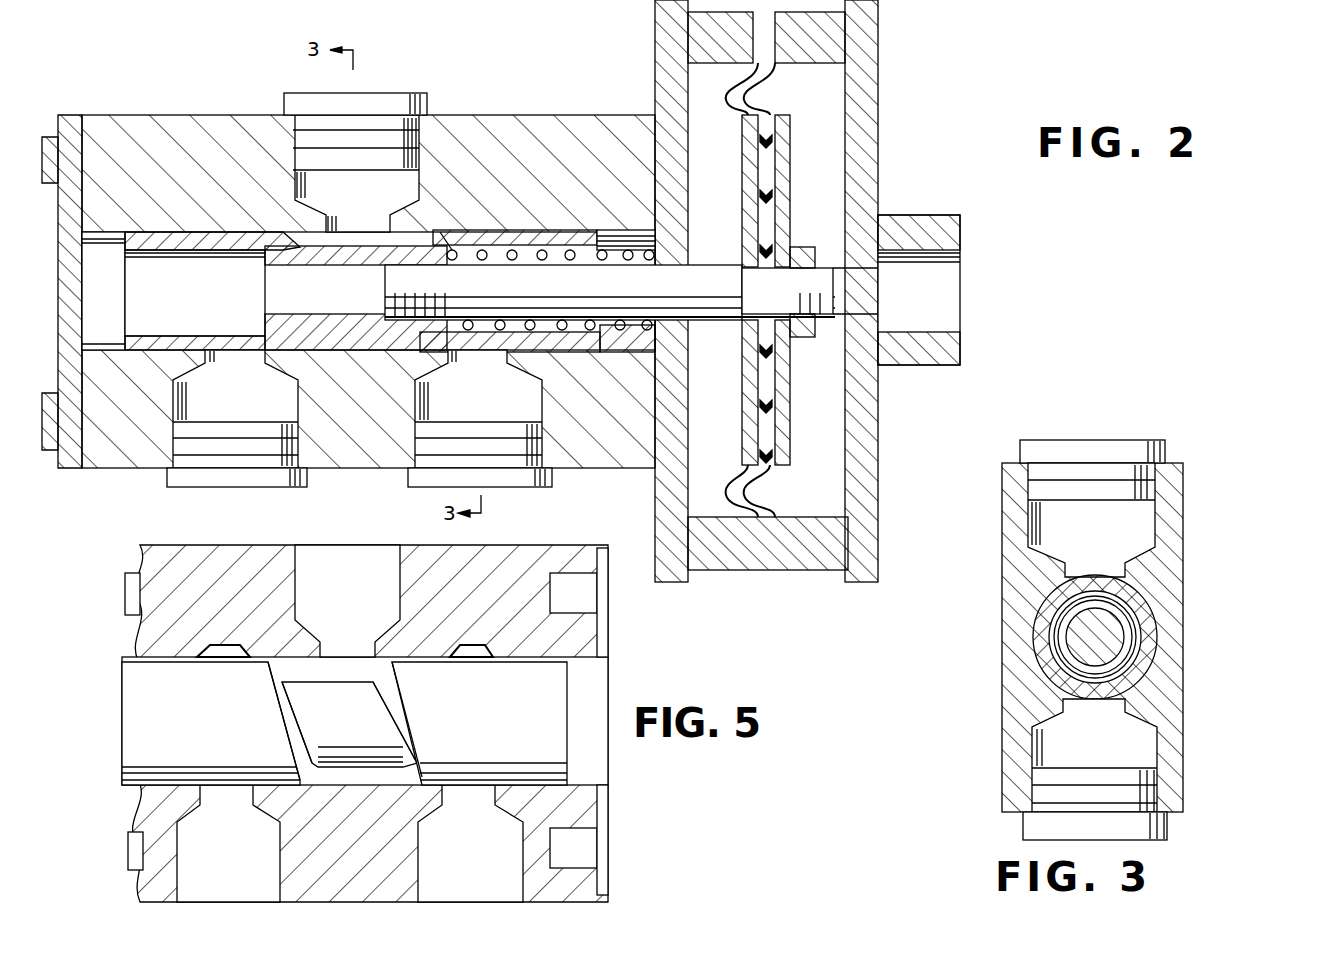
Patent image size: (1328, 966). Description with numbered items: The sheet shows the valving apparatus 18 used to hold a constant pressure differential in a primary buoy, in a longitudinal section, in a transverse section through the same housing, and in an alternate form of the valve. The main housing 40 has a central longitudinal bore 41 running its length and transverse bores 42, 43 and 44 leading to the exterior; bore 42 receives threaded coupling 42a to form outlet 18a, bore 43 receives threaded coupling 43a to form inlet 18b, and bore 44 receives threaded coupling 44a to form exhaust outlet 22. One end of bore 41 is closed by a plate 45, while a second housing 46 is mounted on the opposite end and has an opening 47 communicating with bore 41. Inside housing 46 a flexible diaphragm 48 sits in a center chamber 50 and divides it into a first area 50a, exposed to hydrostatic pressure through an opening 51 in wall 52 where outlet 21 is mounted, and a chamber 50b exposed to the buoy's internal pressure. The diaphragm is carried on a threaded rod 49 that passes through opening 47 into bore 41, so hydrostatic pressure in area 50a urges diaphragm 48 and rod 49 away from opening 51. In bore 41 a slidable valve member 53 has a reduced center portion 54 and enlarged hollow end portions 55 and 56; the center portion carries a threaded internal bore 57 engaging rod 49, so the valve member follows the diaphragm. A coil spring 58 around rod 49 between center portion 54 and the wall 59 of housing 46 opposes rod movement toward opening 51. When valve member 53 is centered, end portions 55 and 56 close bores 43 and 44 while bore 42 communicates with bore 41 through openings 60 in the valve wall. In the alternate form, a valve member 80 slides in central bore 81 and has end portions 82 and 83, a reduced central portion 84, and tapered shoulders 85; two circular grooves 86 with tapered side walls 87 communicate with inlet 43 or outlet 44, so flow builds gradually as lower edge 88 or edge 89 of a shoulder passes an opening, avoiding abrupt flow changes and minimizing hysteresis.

In FIG. 2, the valving apparatus 18 is at (600, 97).
In FIG. 2, the outlet 18a is at (384, 135).
In FIG. 3, the outlet 18a is at (1125, 490).
In FIG. 2, the inlet 18b is at (205, 445).
In FIG. 2, the outlet 21 is at (965, 239).
In FIG. 2, the exhaust outlet 22 is at (418, 482).
In FIG. 2, the housing 40 is at (178, 136).
In FIG. 5, the housing 40 is at (585, 639).
In FIG. 3, the housing 40 is at (1175, 559).
In FIG. 2, the central longitudinal bore 41 is at (104, 265).
In FIG. 2, the transverse bore 42 is at (366, 192).
In FIG. 5, the transverse bore 42 is at (357, 599).
In FIG. 3, the transverse bore 42 is at (1120, 526).
In FIG. 2, the threaded coupling 42a is at (378, 98).
In FIG. 3, the threaded coupling 42a is at (1140, 445).
In FIG. 2, the transverse bore 43 is at (247, 412).
In FIG. 5, the transverse bore 43 is at (232, 855).
In FIG. 2, the threaded coupling 43a is at (240, 480).
In FIG. 2, the transverse bore 44 is at (492, 410).
In FIG. 5, the transverse bore 44 is at (475, 853).
In FIG. 3, the transverse bore 44 is at (1120, 750).
In FIG. 2, the threaded coupling 44a is at (528, 480).
In FIG. 3, the threaded coupling 44a is at (1165, 828).
In FIG. 2, the plate 45 is at (72, 140).
In FIG. 2, the second housing 46 is at (883, 165).
In FIG. 2, the opening 47 is at (690, 265).
In FIG. 2, the flexible diaphragm 48 is at (768, 155).
In FIG. 2, the threaded rod 49 is at (395, 297).
In FIG. 3, the threaded rod 49 is at (1105, 655).
In FIG. 2, the center chamber 50 is at (828, 477).
In FIG. 2, the first area 50a is at (835, 220).
In FIG. 2, the chamber 50b is at (732, 390).
In FIG. 2, the opening 51 is at (880, 294).
In FIG. 2, the wall 52 is at (865, 439).
In FIG. 2, the slidable valve member 53 is at (285, 336).
In FIG. 2, the center portion 54 is at (350, 330).
In FIG. 2, the enlarged end portion 55 is at (158, 343).
In FIG. 2, the enlarged end portion 56 is at (570, 345).
In FIG. 3, the enlarged end portion 56 is at (1150, 615).
In FIG. 2, the internal bore 57 is at (328, 302).
In FIG. 2, the coil spring 58 is at (615, 345).
In FIG. 3, the coil spring 58 is at (1130, 642).
In FIG. 2, the wall 59 is at (672, 160).
In FIG. 2, the openings 60 is at (255, 258).
In FIG. 5, the valve member 80 is at (495, 719).
In FIG. 5, the central bore 81 is at (590, 744).
In FIG. 5, the end portion 82 is at (165, 734).
In FIG. 5, the end portion 83 is at (580, 811).
In FIG. 5, the central portion 84 is at (160, 791).
In FIG. 5, the tapered shoulders 85 is at (285, 721).
In FIG. 5, the circular grooves 86 is at (215, 651).
In FIG. 5, the tapered side walls 87 is at (205, 659).
In FIG. 5, the lower edge 88 is at (405, 810).
In FIG. 5, the edge 89 is at (300, 640).